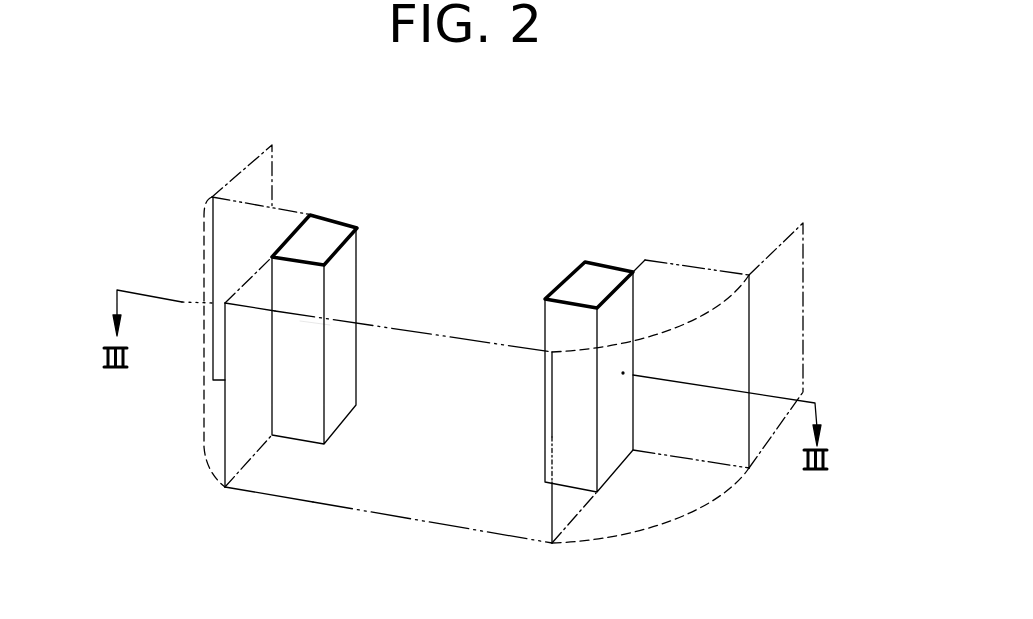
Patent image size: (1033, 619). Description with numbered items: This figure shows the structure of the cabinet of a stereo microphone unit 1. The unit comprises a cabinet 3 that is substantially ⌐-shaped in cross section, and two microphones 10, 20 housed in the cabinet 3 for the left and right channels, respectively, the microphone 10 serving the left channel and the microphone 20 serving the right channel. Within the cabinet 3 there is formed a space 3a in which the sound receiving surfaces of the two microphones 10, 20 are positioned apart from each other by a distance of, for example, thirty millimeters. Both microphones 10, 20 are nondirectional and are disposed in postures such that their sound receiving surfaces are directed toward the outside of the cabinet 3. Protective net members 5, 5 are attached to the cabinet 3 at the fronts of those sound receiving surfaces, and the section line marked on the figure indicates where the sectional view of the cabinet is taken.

The stereo microphone unit 1 is at (457, 135).
The cabinet 3 is at (360, 322).
The space 3a is at (458, 288).
The protective net member 5 is at (205, 452).
The microphone 10 is at (586, 262).
The microphone 20 is at (336, 220).